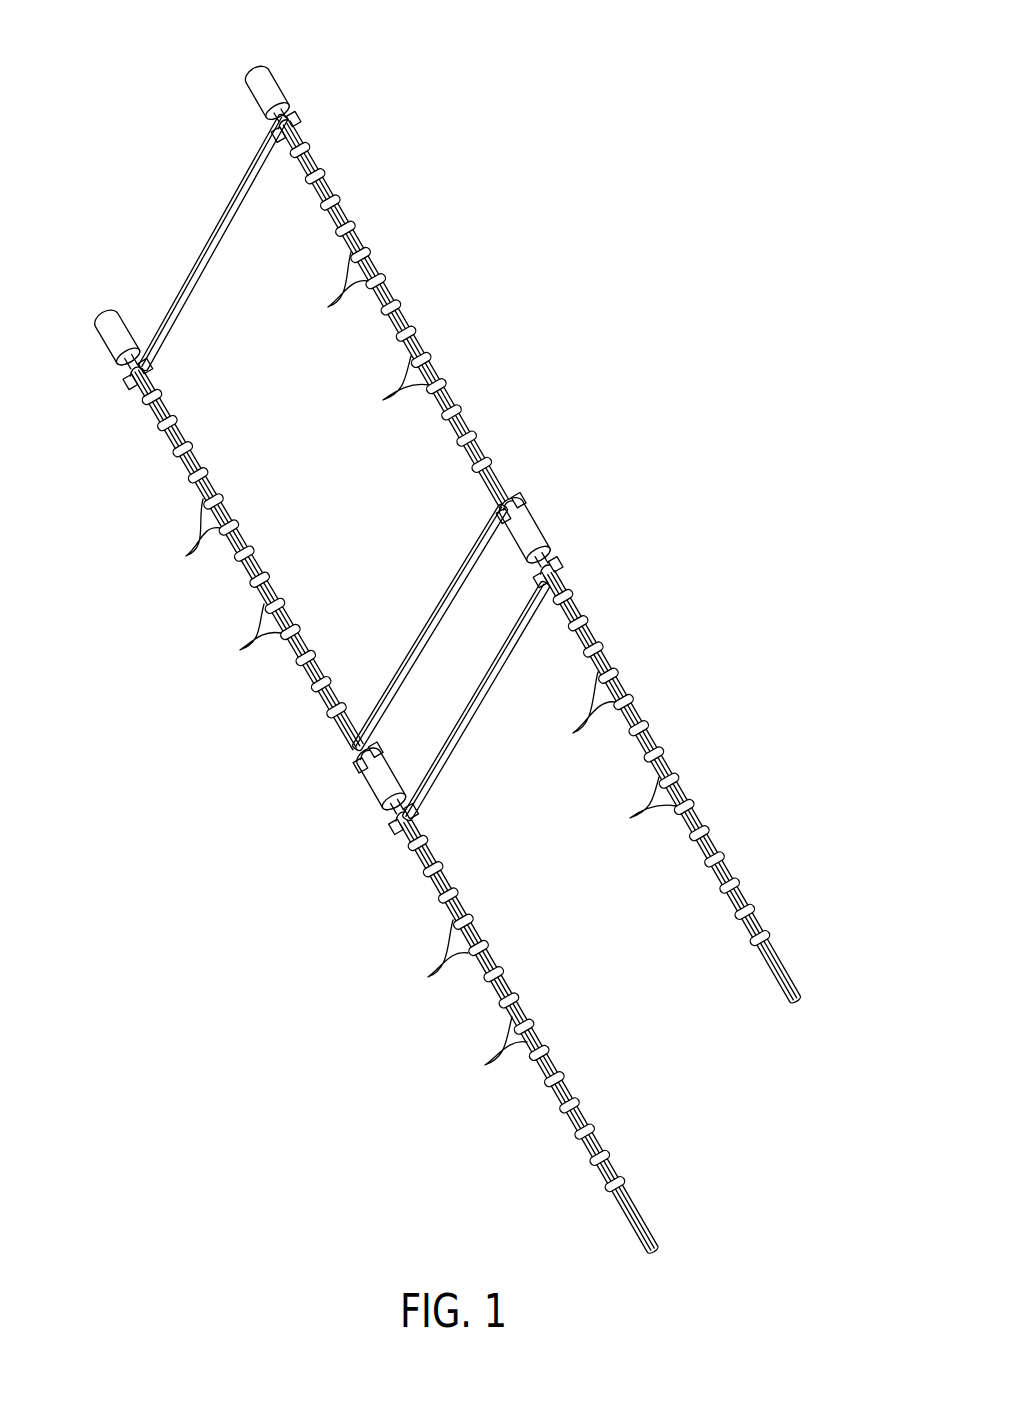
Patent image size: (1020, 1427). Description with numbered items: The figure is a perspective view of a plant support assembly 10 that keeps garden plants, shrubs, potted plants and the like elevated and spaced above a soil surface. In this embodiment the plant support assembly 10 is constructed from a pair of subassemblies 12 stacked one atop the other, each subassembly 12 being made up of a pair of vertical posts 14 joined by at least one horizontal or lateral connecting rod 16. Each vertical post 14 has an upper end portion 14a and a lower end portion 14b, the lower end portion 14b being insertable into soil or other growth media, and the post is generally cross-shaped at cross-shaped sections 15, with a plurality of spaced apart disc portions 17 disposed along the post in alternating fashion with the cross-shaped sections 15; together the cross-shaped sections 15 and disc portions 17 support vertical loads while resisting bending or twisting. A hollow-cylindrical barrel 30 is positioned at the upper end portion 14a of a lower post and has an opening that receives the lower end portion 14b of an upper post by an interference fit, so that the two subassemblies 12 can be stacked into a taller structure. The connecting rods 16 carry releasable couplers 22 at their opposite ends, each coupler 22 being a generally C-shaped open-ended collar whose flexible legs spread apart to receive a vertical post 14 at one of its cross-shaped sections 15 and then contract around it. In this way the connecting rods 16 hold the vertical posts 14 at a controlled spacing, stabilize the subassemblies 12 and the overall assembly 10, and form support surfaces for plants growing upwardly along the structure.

The plant support assembly 10 is at (663, 186).
The subassembly 12 is at (467, 688).
The vertical post 14 is at (383, 287).
The upper end portion 14a is at (302, 55).
The lower end portion 14b is at (515, 478).
The cross-shaped section 15 is at (454, 727).
The connecting rod 16 is at (200, 278).
The disc portion 17 is at (395, 632).
The releasable coupler 22 is at (300, 112).
The barrel 30 is at (262, 78).